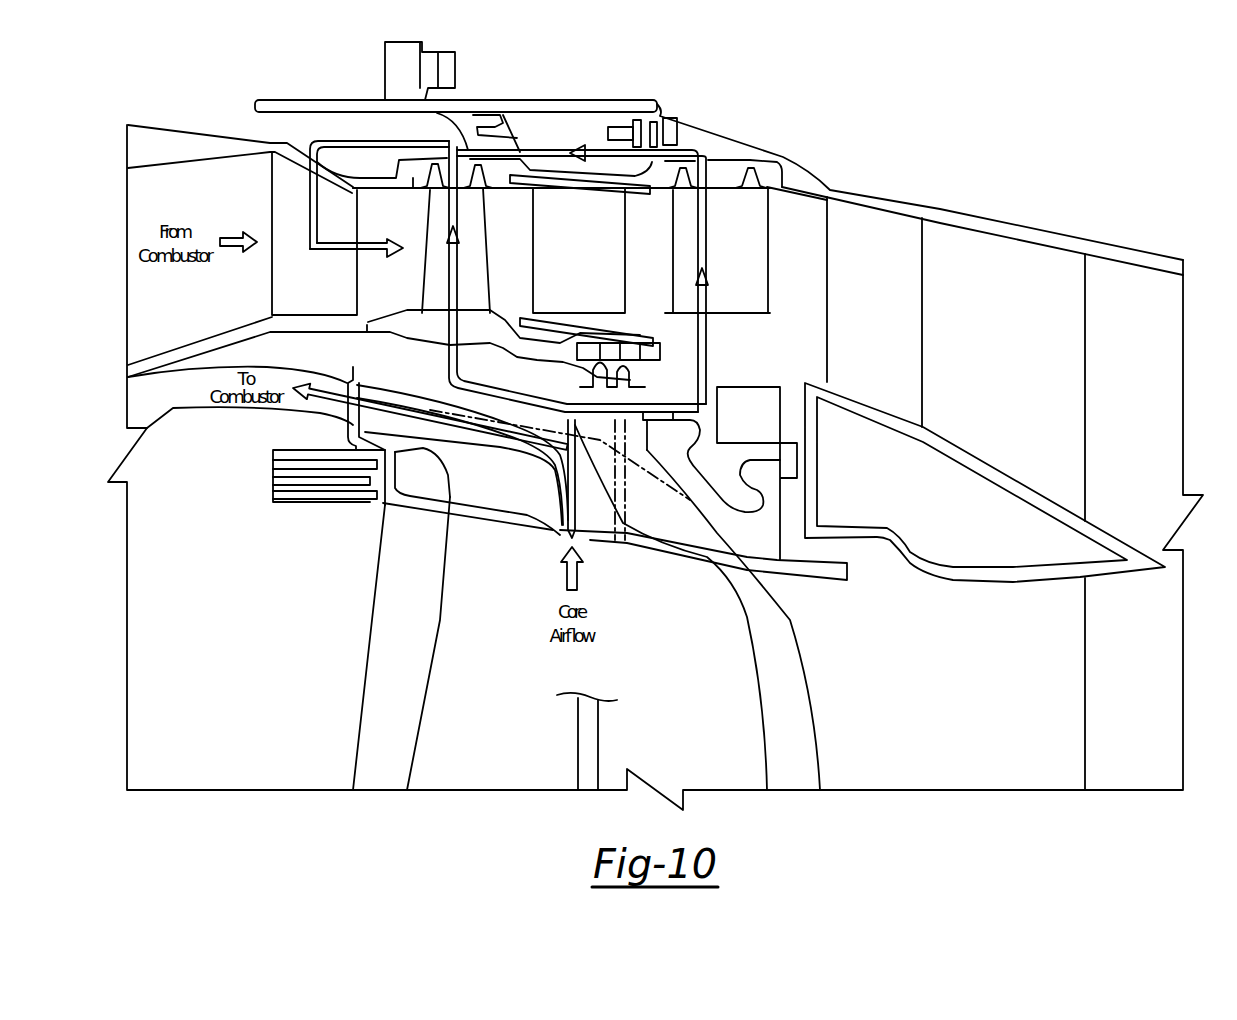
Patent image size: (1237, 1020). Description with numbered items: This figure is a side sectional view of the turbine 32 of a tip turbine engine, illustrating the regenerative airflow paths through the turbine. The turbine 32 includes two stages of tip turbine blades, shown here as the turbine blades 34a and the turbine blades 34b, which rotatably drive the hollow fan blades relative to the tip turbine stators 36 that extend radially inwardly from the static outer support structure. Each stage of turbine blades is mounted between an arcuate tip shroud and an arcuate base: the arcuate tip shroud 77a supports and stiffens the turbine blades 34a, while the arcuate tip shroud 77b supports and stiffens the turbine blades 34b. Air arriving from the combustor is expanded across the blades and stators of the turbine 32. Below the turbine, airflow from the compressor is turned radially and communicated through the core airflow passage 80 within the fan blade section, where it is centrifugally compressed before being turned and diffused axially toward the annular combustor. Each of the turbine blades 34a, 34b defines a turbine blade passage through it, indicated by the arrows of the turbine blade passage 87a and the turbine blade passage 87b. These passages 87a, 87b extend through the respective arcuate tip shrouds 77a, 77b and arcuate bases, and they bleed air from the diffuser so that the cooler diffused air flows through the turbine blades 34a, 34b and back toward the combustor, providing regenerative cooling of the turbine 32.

The turbine 32 is at (697, 92).
The arcuate tip shroud 77a is at (440, 188).
The turbine blades 34a is at (477, 250).
The tip turbine stators 36 is at (588, 253).
The arcuate tip shroud 77b is at (727, 192).
The turbine blade passage 87a is at (453, 285).
The turbine blade passage 87b is at (697, 317).
The turbine blades 34b is at (752, 323).
The core airflow passage 80 is at (733, 688).